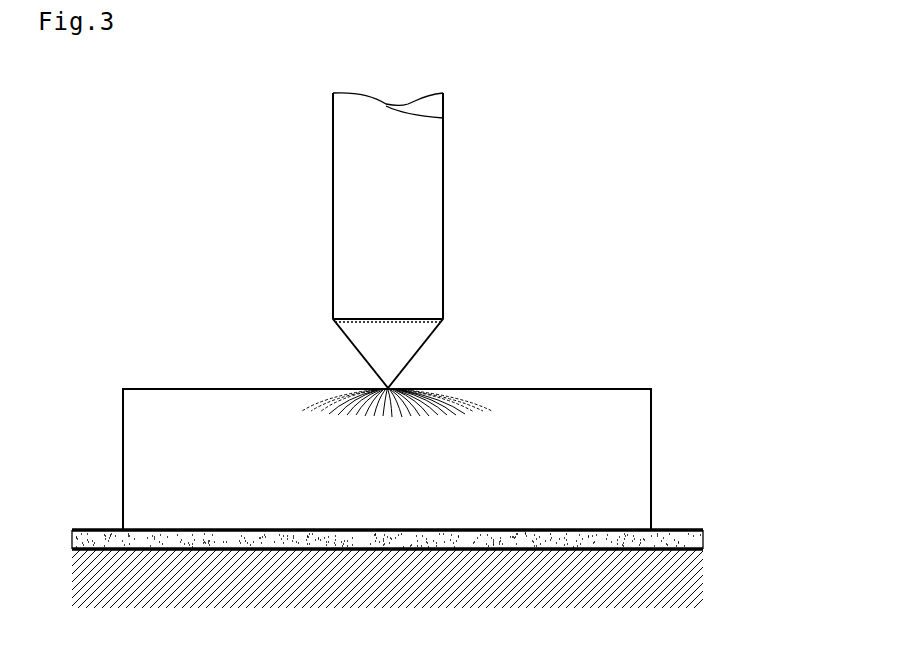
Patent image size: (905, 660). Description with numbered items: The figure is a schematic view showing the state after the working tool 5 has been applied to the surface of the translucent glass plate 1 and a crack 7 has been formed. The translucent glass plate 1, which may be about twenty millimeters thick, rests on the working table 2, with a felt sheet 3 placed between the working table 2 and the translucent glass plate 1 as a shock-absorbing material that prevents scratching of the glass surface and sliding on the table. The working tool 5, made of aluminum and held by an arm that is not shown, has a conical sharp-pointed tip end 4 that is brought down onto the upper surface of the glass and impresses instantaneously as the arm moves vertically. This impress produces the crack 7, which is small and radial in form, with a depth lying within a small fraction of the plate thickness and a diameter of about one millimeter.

The translucent glass plate 1 is at (631, 450).
The working table 2 is at (678, 578).
The felt sheet 3 is at (703, 540).
The conical sharp-pointed tip end 4 is at (410, 354).
The working tool 5 is at (496, 240).
The crack 7 is at (400, 422).